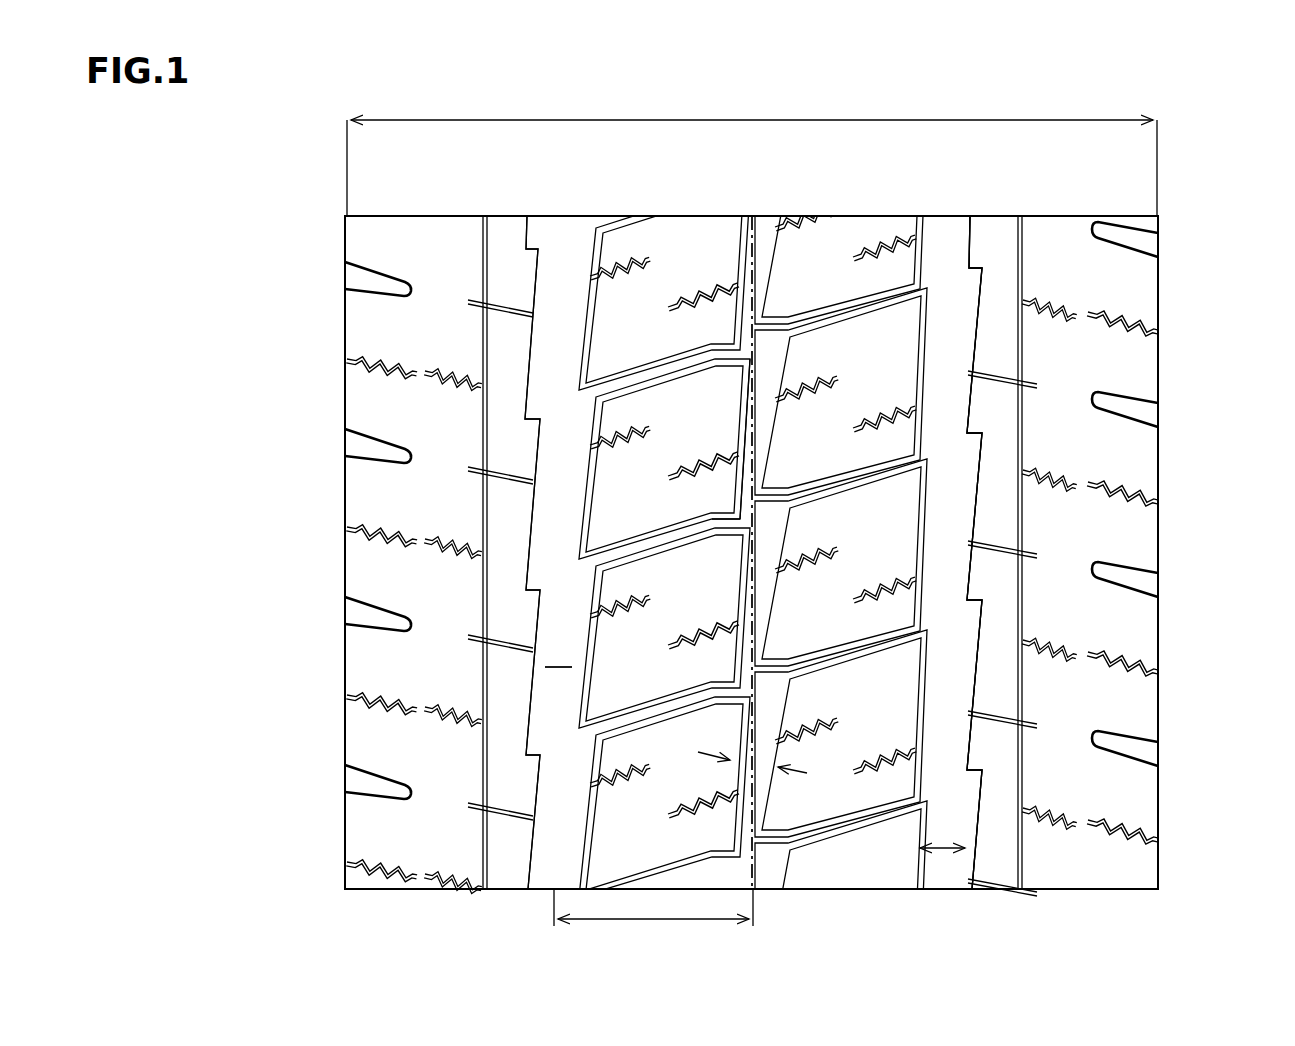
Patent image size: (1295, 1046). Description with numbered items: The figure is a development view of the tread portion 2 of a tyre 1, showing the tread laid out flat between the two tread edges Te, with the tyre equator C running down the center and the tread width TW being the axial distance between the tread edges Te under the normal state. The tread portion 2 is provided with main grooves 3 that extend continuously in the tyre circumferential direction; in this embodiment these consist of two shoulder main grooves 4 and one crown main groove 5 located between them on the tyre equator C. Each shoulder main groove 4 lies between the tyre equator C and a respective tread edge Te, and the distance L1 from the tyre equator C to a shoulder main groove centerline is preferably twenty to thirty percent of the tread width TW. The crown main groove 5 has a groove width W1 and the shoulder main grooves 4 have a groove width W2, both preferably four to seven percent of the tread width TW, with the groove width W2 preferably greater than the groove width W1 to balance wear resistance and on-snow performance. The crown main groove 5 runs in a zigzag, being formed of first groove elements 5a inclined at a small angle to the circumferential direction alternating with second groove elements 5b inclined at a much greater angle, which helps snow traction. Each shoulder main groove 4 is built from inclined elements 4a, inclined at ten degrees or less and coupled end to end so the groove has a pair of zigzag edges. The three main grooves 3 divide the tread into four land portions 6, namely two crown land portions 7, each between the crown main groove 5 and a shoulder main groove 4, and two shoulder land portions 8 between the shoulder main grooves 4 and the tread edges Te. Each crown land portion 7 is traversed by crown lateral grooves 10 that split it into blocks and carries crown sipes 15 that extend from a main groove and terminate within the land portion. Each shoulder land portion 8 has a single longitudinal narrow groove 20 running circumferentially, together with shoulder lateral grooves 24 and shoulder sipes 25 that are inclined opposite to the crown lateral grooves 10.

The tyre 1 is at (1005, 212).
The tread portion 2 is at (608, 213).
The main grooves 3 is at (948, 368).
The shoulder main grooves 4 is at (560, 268).
The inclined elements 4a is at (562, 330).
The crown main groove 5 is at (534, 521).
The first groove elements 5a is at (745, 432).
The second groove elements 5b is at (725, 520).
The land portions 6 is at (456, 250).
The crown land portion 7 is at (668, 270).
The shoulder land portions 8 is at (714, 553).
The crown lateral grooves 10 is at (635, 372).
The crown sipes 15 is at (578, 598).
The longitudinal narrow groove 20 is at (487, 822).
The shoulder lateral grooves 24 is at (378, 788).
The shoulder sipes 25 is at (365, 690).
The tyre equator C is at (752, 530).
The tread edges Te is at (343, 252).
The tread width TW is at (752, 153).
The distance L1 is at (653, 921).
The groove width of the crown main groove W1 is at (760, 770).
The groove width of the shoulder main grooves W2 is at (942, 852).